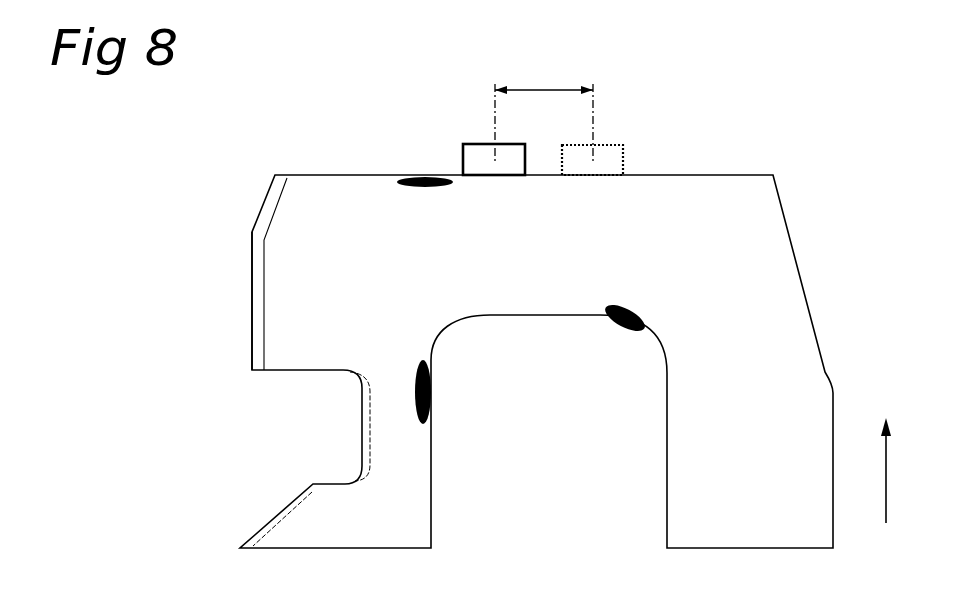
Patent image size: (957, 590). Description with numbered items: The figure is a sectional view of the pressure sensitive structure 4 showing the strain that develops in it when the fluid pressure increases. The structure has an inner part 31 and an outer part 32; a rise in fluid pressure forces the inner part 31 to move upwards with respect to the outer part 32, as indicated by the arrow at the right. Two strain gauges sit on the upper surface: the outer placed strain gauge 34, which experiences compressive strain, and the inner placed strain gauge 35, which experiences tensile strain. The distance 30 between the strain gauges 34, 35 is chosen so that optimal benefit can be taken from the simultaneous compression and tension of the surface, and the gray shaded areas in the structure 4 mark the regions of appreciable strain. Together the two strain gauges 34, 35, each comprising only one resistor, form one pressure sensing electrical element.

The pressure sensitive structure 4 is at (824, 274).
The distance between sensors 30 is at (544, 112).
The inner part 31 is at (750, 345).
The outer part 32 is at (308, 302).
The outer placed strain gauge 34 is at (478, 150).
The inner placed strain gauge 35 is at (605, 152).